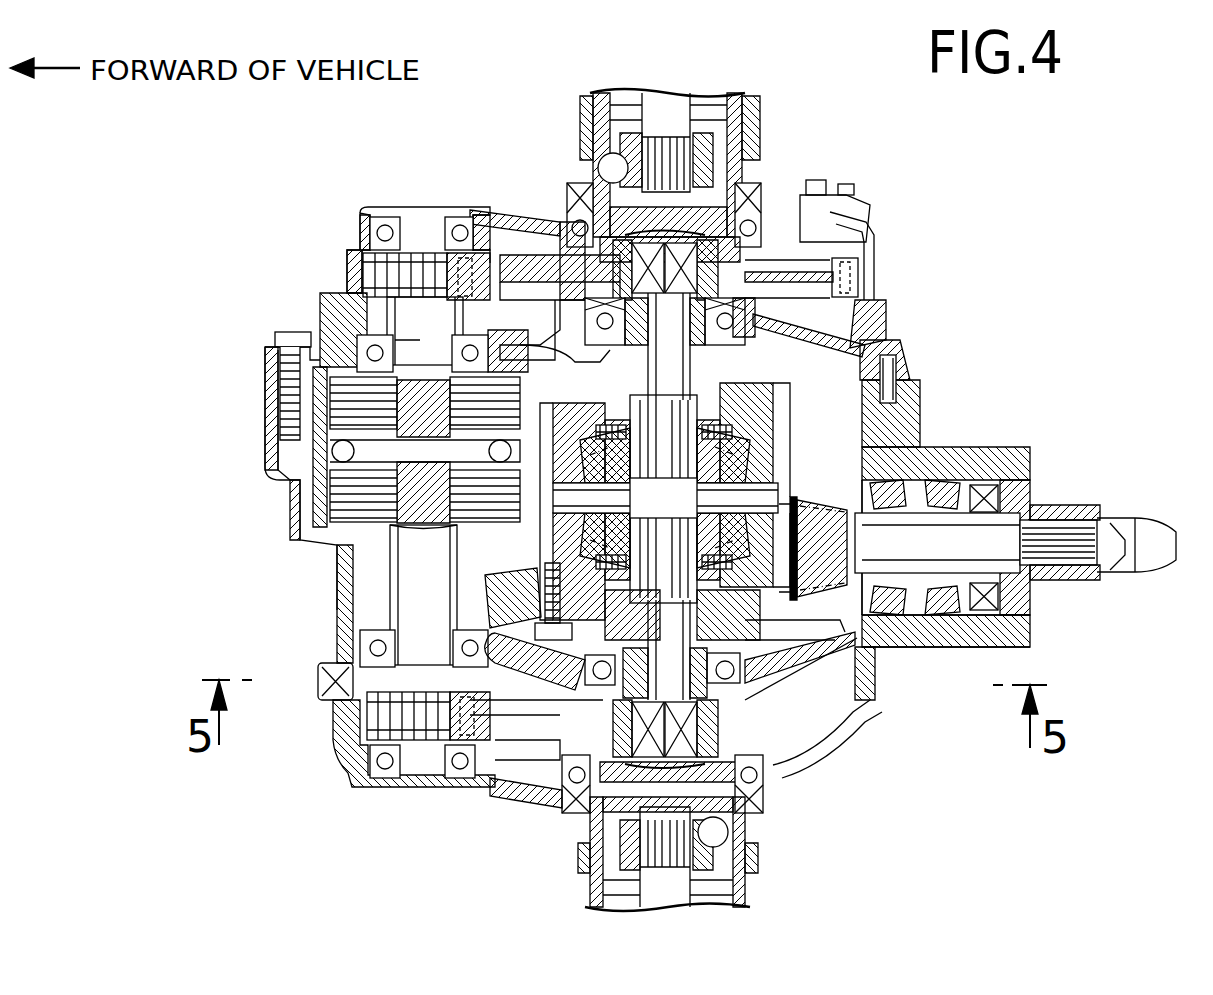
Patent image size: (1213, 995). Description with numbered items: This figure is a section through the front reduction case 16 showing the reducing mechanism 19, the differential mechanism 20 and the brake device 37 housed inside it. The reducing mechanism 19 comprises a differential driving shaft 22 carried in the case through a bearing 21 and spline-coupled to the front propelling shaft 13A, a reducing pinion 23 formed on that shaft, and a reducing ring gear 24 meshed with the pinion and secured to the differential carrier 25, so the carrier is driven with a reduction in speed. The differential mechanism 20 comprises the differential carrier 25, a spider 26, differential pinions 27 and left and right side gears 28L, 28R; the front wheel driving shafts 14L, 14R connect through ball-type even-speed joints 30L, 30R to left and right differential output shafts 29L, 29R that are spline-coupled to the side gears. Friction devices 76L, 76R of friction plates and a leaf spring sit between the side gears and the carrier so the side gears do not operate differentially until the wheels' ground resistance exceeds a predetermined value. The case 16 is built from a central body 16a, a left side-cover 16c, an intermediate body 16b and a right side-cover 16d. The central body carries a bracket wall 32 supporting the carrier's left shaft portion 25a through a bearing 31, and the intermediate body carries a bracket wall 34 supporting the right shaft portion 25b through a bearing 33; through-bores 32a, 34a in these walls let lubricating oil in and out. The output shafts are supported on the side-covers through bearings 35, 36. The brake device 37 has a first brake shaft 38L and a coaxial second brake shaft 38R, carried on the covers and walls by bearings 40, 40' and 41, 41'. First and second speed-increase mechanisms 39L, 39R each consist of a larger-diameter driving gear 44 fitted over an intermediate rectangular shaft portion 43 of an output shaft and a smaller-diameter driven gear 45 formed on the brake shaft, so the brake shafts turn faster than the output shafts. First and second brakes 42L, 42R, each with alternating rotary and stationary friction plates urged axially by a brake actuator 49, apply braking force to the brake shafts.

The front propelling shaft 13A is at (1143, 525).
The right front wheel driving shaft 14R is at (600, 95).
The left front wheel driving shaft 14L is at (690, 890).
The front reduction case 16 is at (925, 388).
The central body 16a is at (890, 675).
The intermediate body 16b is at (885, 335).
The left side-cover 16c is at (855, 752).
The right side-cover 16d is at (880, 262).
The reducing mechanism 19 is at (820, 498).
The differential mechanism 20 is at (772, 420).
The bearing 21 is at (945, 460).
The differential driving shaft 22 is at (950, 550).
The reducing pinion 23 is at (803, 502).
The reducing ring gear 24 is at (880, 698).
The differential carrier 25 is at (565, 430).
The left shaft portion 25a is at (705, 640).
The right shaft portion 25b is at (600, 335).
The spider 26 is at (665, 498).
The differential pinion 27 is at (770, 452).
The right side gear 28R is at (725, 398).
The left side gear 28L is at (758, 565).
The right differential output shaft 29R is at (735, 200).
The left differential output shaft 29L is at (745, 815).
The right ball-type even-speed joint 30R is at (598, 163).
The left ball-type even-speed joint 30L is at (615, 842).
The bearing 31 is at (582, 672).
The bracket wall 32 is at (768, 700).
The through-bore 32a is at (785, 677).
The bearing 33 is at (770, 316).
The bracket wall 34 is at (530, 342).
The through-bore 34a is at (862, 308).
The bearing 35 is at (548, 788).
The bearing 36 is at (805, 210).
The brake device 37 is at (310, 478).
The second brake shaft 38R is at (405, 325).
The first brake shaft 38L is at (447, 597).
The second speed-increase mechanism 39R is at (468, 150).
The first speed-increase mechanism 39L is at (488, 843).
The bearing 40 is at (390, 769).
The bearing 40' is at (379, 643).
The bearing 41 is at (390, 231).
The bearing 41' is at (383, 326).
The second brake 42R is at (325, 383).
The first brake 42L is at (335, 525).
The intermediate rectangular shaft portion 43 is at (665, 280).
The larger-diameter driving gear 44 is at (490, 258).
The smaller-diameter driven gear 45 is at (422, 262).
The brake actuator 49 is at (330, 450).
The friction device 76R is at (740, 430).
The friction device 76L is at (585, 552).